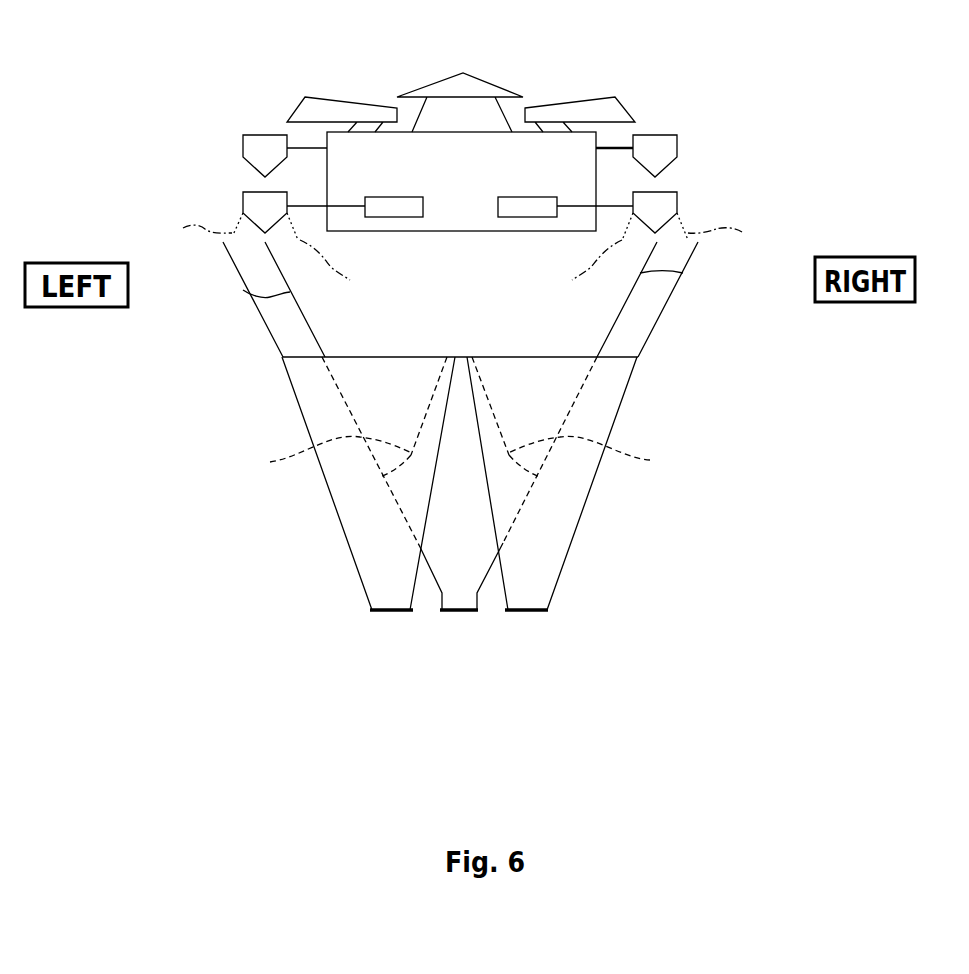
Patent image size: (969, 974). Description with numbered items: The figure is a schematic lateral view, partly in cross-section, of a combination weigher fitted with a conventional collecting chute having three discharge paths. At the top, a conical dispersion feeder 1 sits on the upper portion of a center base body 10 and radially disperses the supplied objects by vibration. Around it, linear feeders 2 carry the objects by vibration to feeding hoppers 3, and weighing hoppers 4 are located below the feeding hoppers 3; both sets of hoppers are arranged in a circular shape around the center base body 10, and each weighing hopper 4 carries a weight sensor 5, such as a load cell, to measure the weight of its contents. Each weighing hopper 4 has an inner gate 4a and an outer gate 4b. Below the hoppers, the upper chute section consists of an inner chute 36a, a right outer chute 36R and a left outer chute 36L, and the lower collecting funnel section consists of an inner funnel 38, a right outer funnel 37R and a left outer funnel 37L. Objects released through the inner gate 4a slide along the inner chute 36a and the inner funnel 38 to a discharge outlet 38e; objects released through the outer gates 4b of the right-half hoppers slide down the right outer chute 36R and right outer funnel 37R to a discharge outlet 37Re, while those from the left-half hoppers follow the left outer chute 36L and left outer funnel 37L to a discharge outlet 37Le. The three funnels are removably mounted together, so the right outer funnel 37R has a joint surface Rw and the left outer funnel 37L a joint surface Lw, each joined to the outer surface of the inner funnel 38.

The dispersion feeder 1 is at (430, 85).
The linear feeder 2 is at (343, 100).
The feeding hopper 3 is at (243, 150).
The weighing hopper 4 is at (243, 207).
The inner gate 4a is at (461, 267).
The outer gate 4b is at (462, 232).
The weight sensor 5 is at (397, 195).
The center base body 10 is at (460, 232).
The left outer chute 36L is at (268, 323).
The right outer chute 36R is at (660, 317).
The inner chute 36a is at (243, 290).
The left outer funnel 37L is at (345, 505).
The right outer funnel 37R is at (585, 505).
The discharge outlet 37Le is at (392, 613).
The discharge outlet 37Re is at (530, 613).
The inner funnel 38 is at (485, 582).
The discharge outlet 38e is at (457, 613).
The joint surface Lw is at (270, 462).
The joint surface Rw is at (650, 460).